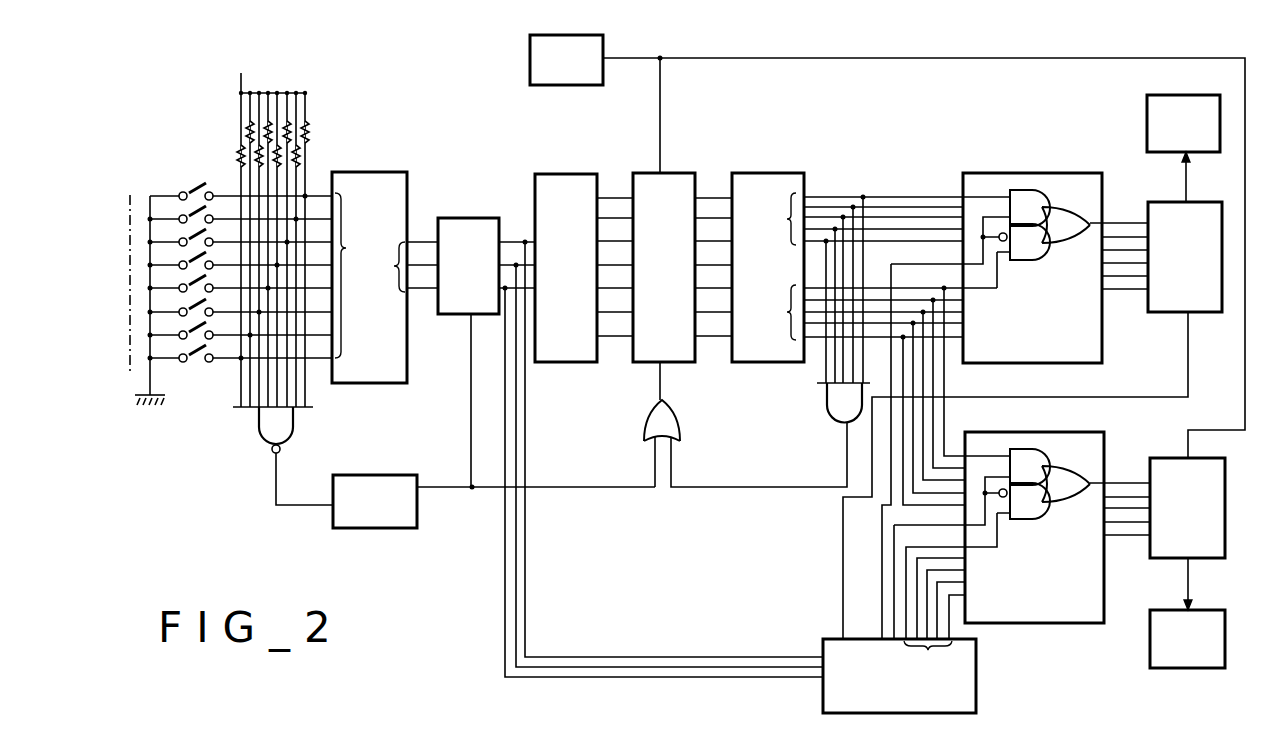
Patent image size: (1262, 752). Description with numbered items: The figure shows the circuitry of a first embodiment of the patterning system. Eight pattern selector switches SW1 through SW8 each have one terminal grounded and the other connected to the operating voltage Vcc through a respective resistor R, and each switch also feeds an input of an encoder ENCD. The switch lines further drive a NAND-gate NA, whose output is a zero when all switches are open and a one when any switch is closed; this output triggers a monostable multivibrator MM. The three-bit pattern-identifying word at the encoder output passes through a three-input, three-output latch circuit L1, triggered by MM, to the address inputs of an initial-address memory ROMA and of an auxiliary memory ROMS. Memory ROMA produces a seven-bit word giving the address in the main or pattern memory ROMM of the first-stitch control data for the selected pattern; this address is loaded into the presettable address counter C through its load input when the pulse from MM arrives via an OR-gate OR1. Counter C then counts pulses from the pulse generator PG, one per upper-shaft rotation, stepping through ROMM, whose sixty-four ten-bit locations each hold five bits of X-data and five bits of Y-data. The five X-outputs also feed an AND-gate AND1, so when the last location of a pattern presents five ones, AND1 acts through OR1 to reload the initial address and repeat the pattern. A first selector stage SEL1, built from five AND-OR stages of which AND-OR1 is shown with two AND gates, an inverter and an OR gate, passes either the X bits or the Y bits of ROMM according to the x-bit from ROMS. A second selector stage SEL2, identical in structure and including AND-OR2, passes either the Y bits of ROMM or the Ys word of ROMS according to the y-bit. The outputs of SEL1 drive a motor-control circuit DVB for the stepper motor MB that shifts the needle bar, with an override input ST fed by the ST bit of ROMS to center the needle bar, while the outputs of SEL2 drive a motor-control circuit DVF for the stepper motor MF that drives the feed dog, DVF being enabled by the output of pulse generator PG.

The operating voltage Vcc is at (258, 74).
The resistor R is at (272, 250).
The pattern selector switch SW1 is at (191, 187).
The pattern selector switch SW8 is at (191, 361).
The encoder ENCD is at (369, 277).
The NAND-gate NA is at (283, 456).
The monostable multivibrator MM is at (494, 501).
The latch circuit L1 is at (615, 447).
The initial-address memory ROMA is at (580, 255).
The address counter C is at (682, 229).
The pulse generator PG is at (887, 246).
The OR-gate OR1 is at (745, 443).
The AND-gate AND1 is at (820, 312).
The main or pattern memory ROMM is at (867, 327).
The first selector stage SEL1 is at (1019, 268).
The AND-OR-gate stage AND-OR1 is at (1019, 241).
The second selector stage SEL2 is at (1022, 527).
The AND-OR-gate stage AND-OR2 is at (1022, 500).
The motor-control circuit DVB is at (1032, 395).
The stepper motor MB is at (1183, 123).
The motor-control circuit DVF is at (1187, 534).
The stepper motor MF is at (1187, 639).
The auxiliary memory ROMS is at (899, 488).